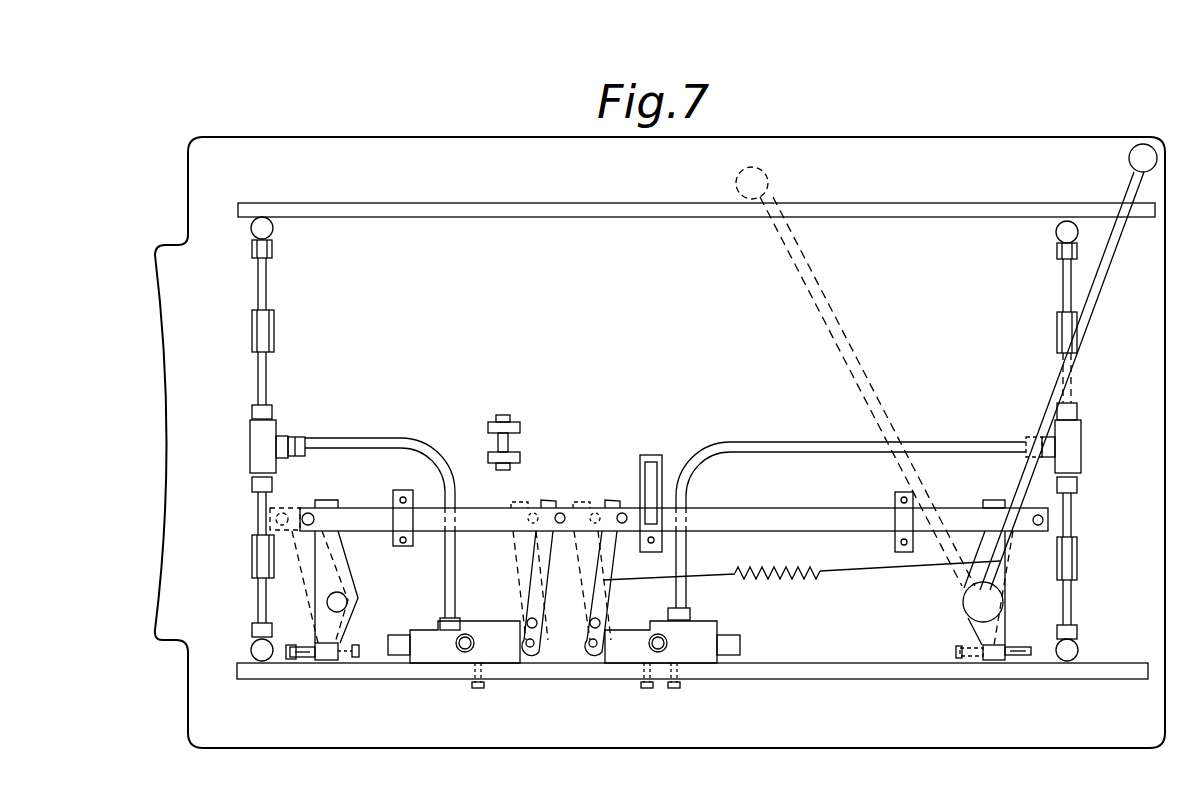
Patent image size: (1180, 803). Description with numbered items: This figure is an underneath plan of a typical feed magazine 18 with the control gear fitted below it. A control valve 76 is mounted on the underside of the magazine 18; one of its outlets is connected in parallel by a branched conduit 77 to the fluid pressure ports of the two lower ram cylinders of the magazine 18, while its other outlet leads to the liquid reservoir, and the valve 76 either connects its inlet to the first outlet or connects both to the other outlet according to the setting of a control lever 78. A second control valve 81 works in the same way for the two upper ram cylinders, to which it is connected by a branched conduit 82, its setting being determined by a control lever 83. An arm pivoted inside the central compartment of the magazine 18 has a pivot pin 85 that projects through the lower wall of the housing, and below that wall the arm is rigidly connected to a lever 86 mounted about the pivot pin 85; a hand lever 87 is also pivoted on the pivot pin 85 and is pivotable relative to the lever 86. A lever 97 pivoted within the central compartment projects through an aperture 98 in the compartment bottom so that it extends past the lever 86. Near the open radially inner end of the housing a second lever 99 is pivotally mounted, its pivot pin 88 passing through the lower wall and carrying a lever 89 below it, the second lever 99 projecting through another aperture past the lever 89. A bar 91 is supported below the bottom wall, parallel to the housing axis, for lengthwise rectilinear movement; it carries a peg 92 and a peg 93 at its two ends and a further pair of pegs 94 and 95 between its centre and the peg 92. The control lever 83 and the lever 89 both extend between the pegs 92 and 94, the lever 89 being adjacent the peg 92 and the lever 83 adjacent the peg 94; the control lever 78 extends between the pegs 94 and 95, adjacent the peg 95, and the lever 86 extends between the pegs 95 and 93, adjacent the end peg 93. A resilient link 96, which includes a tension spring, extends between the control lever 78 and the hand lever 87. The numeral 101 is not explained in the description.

The feed magazine 18 is at (305, 124).
The control valve 76 is at (710, 652).
The branched conduit 77 is at (950, 442).
The control lever 78 is at (600, 608).
The second control valve 81 is at (447, 656).
The branched conduit 82 is at (378, 438).
The control lever 83 is at (530, 588).
The pivot pin 85 is at (964, 601).
The lever 86 is at (995, 624).
The hand lever 87 is at (1093, 304).
The pivot pin 88 is at (340, 601).
The lever 89 is at (355, 636).
The bar 91 is at (472, 520).
The peg 92 is at (308, 512).
The peg 93 is at (1044, 520).
The peg 94 is at (561, 513).
The peg 95 is at (622, 513).
The resilient link 96 is at (796, 583).
The lever 97 is at (1023, 660).
The aperture 98 is at (1018, 660).
The second lever 99 is at (308, 658).
The lock nut 101 is at (291, 655).